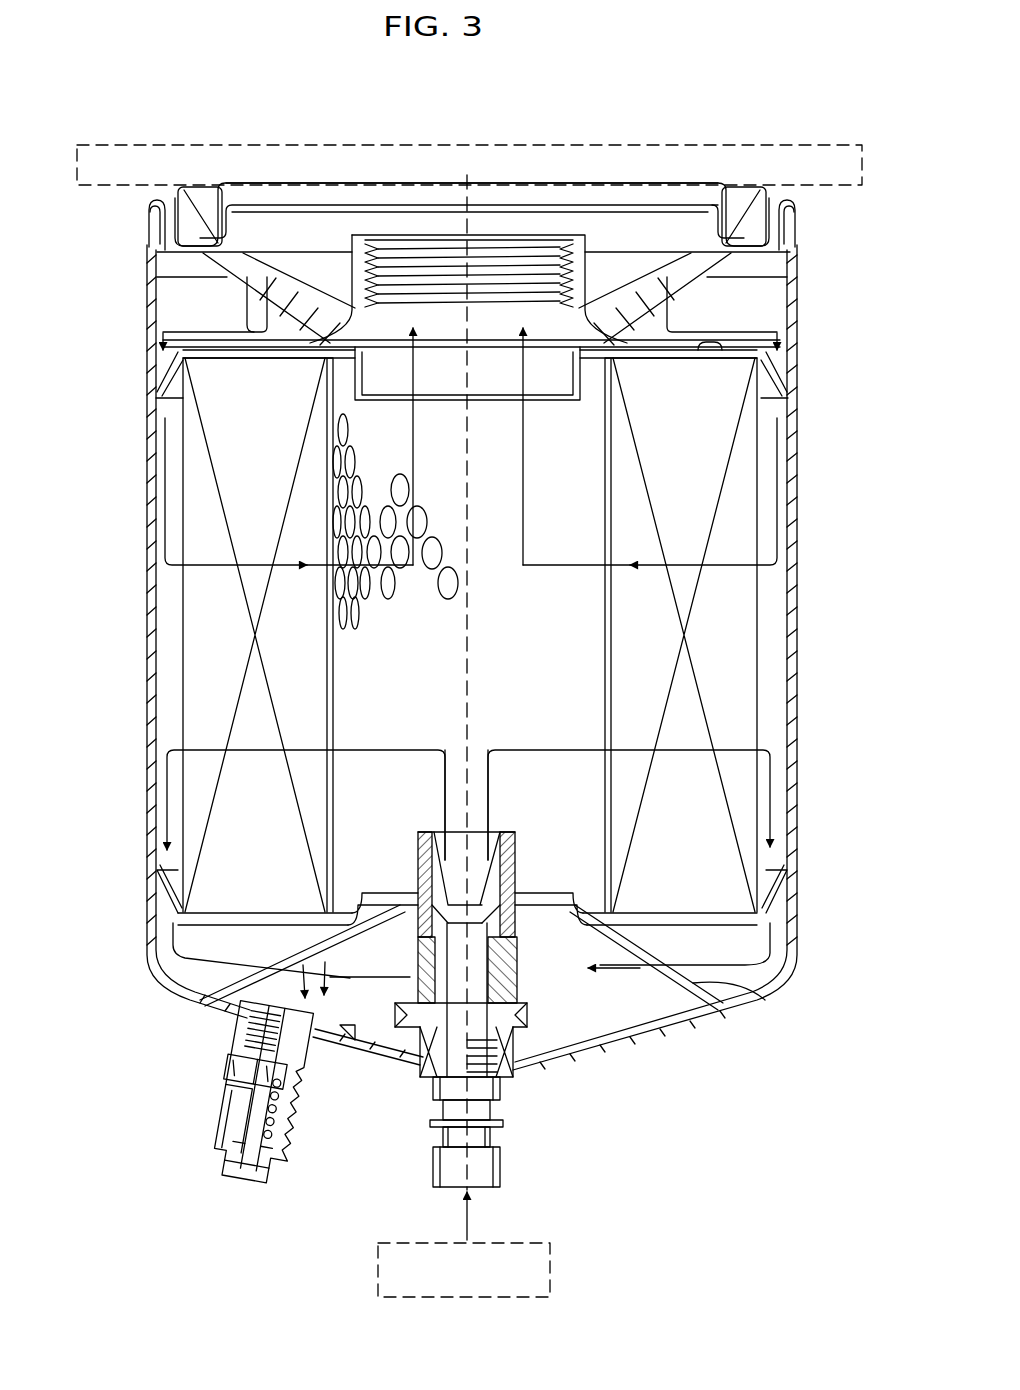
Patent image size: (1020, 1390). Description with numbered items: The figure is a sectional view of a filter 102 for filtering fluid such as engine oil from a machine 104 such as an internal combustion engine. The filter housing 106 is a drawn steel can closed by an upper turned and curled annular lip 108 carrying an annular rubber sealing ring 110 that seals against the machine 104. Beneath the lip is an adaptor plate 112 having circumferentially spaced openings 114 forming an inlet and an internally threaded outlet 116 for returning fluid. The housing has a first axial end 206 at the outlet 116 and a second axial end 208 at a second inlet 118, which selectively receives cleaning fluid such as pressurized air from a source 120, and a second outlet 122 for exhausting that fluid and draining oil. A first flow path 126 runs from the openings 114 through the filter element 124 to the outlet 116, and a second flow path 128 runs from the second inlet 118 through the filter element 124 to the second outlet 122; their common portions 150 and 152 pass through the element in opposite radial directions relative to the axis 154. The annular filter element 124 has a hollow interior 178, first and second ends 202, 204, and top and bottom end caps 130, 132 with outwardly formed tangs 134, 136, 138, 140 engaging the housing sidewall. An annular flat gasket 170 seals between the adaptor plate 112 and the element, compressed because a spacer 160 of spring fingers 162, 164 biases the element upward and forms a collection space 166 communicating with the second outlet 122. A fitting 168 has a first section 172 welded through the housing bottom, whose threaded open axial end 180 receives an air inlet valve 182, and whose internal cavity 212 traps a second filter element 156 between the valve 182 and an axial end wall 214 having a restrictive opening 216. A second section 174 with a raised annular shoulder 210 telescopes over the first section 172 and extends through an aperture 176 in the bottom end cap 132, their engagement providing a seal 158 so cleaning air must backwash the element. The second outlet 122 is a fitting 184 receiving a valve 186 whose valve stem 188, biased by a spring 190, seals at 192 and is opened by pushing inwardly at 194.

The filter 102 is at (116, 302).
The machine 104 is at (99, 188).
The filter housing 106 is at (147, 435).
The upper turned and curled annular lip 108 is at (232, 202).
The annular rubber sealing ring 110 is at (207, 186).
The adaptor plate 112 is at (188, 268).
The openings 114 is at (262, 296).
The outlet 116 is at (370, 333).
The second inlet 118 is at (533, 1080).
The source of cleaning fluid 120 is at (550, 1255).
The second outlet 122 is at (220, 1057).
The filter element 124 is at (200, 705).
The first flow path 126 is at (523, 442).
The second flow path 128 is at (493, 750).
The top end cap 130 is at (705, 352).
The bottom end cap 132 is at (743, 930).
The tang 134 is at (783, 391).
The tang 136 is at (157, 388).
The tang 138 is at (783, 882).
The tang 140 is at (153, 882).
The flow path portion 150 is at (683, 560).
The flow path portion 152 is at (693, 750).
The axis 154 is at (467, 683).
The second filter element 156 is at (480, 993).
The seal 158 is at (540, 827).
The spacer 160 is at (330, 943).
The spring finger 162 is at (297, 933).
The spring finger 164 is at (767, 992).
The collection space 166 is at (677, 1018).
The fitting 168 is at (540, 1030).
The annular flat gasket 170 is at (658, 360).
The first section 172 is at (413, 1057).
The second section 174 is at (420, 985).
The aperture 176 is at (430, 857).
The hollow interior 178 is at (350, 693).
The open axial end 180 is at (443, 1075).
The air inlet valve 182 is at (500, 1163).
The fitting 184 is at (237, 1022).
The valve 186 is at (228, 1142).
The valve stem 188 is at (267, 1163).
The spring 190 is at (287, 1103).
The seal 192 is at (270, 1193).
The push location 194 is at (253, 1193).
The first end 202 is at (290, 360).
The second end 204 is at (267, 910).
The first axial end 206 is at (803, 238).
The second axial end 208 is at (760, 1030).
The raised annular shoulder 210 is at (550, 940).
The internal cavity 212 is at (425, 1012).
The axial end wall 214 is at (443, 860).
The opening 216 is at (502, 860).